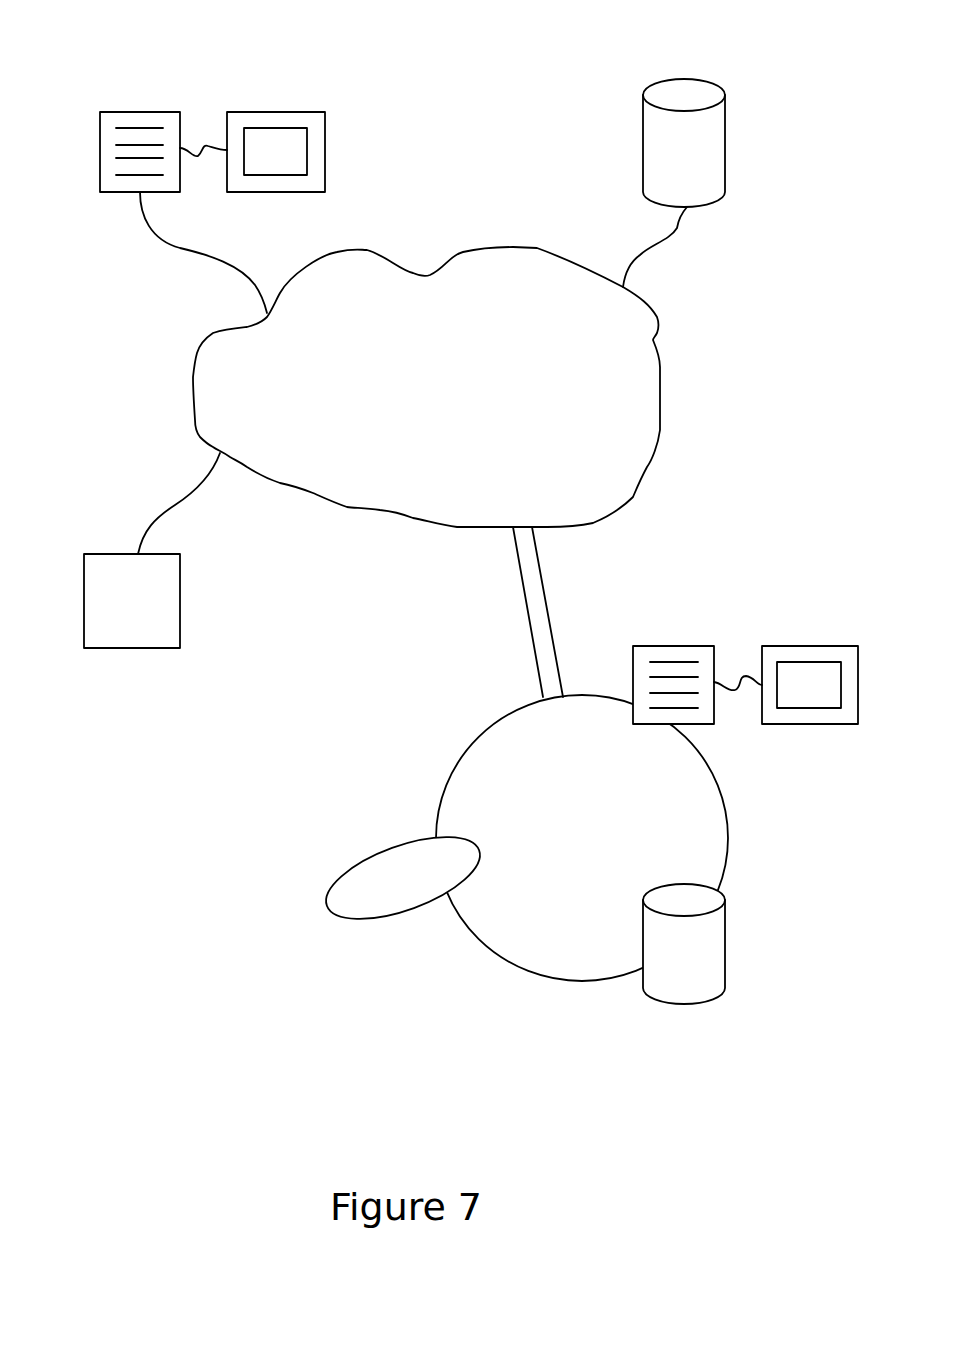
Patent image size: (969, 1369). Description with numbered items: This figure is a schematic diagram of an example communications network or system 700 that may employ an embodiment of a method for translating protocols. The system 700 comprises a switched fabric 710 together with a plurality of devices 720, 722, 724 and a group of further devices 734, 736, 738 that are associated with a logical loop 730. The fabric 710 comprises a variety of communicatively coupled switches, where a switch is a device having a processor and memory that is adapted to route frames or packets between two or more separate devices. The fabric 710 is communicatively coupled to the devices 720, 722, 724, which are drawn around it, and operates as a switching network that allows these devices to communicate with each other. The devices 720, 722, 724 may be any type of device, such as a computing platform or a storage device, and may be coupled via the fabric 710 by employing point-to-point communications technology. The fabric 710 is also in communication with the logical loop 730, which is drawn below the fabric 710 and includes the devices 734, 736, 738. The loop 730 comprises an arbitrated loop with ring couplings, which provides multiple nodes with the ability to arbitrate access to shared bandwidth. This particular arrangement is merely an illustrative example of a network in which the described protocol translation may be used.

The communications network or system 700 is at (451, 37).
The switched fabric 710 is at (426, 387).
The device 720 is at (150, 112).
The device 722 is at (122, 648).
The device 724 is at (725, 140).
The logical loop 730 is at (478, 733).
The device 734 is at (328, 892).
The device 736 is at (727, 968).
The device 738 is at (667, 646).